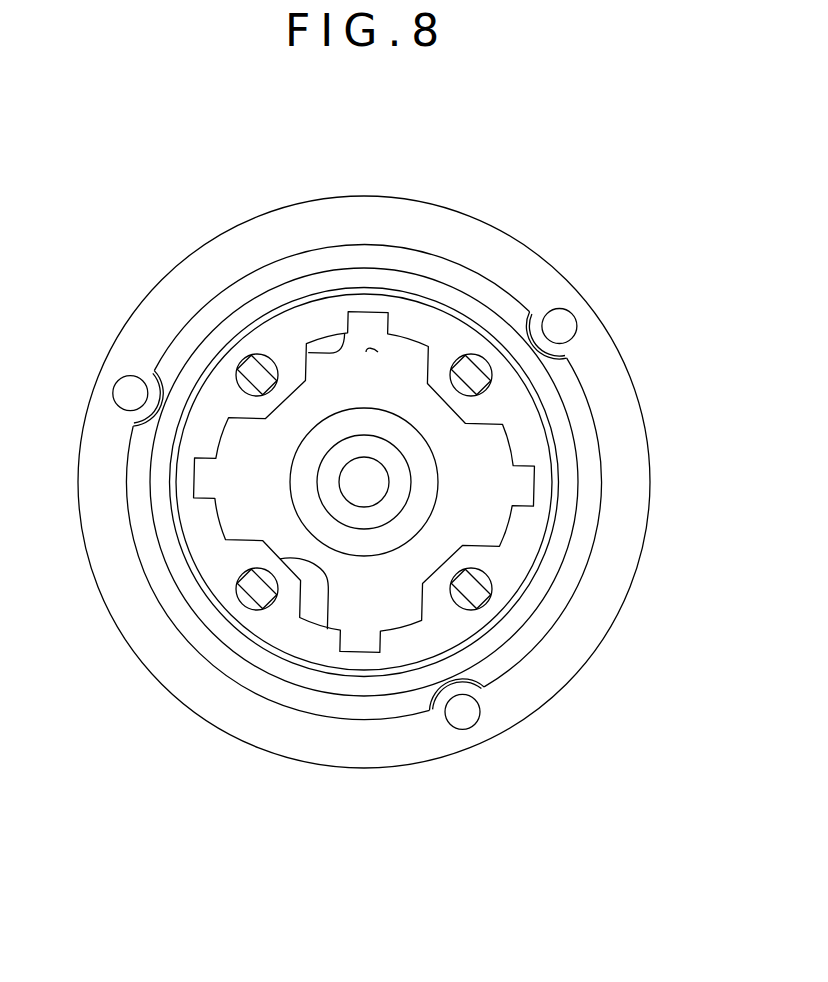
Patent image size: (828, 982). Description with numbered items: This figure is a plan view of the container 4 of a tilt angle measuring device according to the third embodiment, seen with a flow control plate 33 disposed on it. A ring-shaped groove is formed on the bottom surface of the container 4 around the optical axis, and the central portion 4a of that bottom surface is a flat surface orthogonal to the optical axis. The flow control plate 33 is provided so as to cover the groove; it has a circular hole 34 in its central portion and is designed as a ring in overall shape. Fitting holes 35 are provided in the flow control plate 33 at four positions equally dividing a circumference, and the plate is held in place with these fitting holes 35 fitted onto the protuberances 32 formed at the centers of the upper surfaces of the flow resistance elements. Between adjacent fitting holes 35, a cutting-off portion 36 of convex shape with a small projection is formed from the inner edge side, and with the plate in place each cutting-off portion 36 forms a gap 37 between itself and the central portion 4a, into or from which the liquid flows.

The container 4 is at (196, 598).
The central portion 4a is at (378, 538).
The protuberance 32 is at (481, 598).
The flow control plate 33 is at (510, 563).
The circular hole 34 is at (331, 600).
The fitting hole 35 is at (481, 359).
The cutting-off portion 36 is at (304, 353).
The gap 37 is at (365, 352).